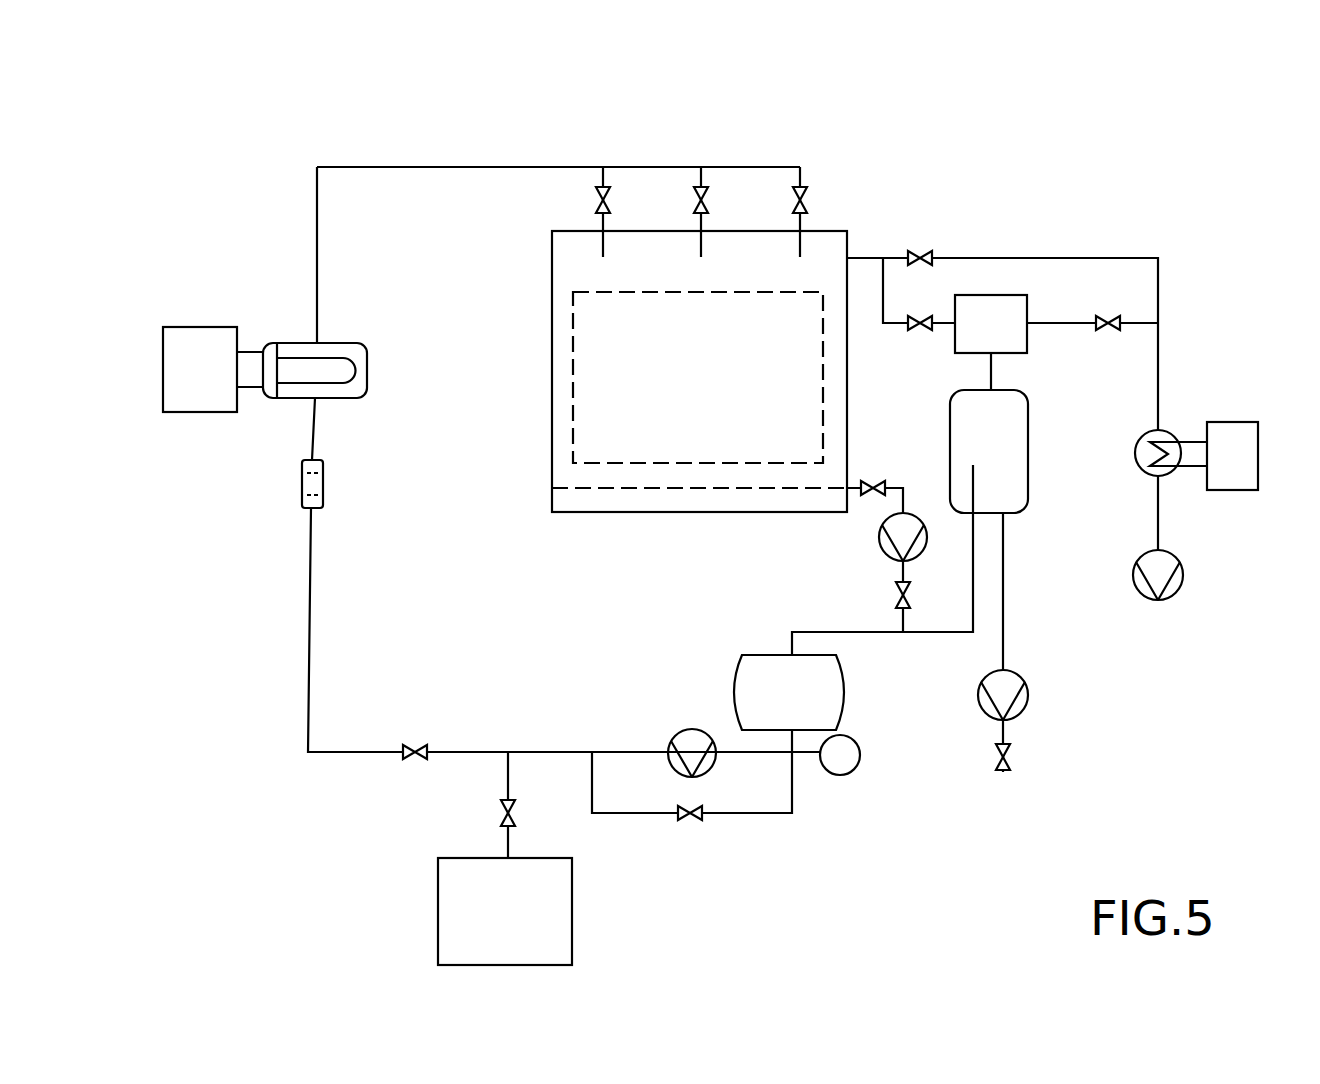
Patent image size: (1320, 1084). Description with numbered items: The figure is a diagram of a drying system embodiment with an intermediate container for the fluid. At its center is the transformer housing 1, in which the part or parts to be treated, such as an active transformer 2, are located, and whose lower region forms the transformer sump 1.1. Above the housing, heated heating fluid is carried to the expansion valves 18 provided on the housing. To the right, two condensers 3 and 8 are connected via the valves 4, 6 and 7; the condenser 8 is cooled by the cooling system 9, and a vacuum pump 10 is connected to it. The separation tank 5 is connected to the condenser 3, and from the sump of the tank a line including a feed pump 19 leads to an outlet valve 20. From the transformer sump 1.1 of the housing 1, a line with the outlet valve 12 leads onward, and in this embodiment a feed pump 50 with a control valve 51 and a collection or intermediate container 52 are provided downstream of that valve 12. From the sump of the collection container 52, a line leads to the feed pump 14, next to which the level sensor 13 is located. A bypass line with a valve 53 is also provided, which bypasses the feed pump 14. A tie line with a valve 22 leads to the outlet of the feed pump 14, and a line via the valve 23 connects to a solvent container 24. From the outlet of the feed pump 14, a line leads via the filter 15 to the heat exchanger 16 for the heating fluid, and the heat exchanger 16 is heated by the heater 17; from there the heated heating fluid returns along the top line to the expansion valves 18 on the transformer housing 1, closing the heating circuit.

The transformer housing 1 is at (847, 392).
The transformer sump 1.1 is at (696, 502).
The active transformer 2 is at (570, 408).
The condenser 3 is at (1018, 342).
The valve 4 is at (918, 330).
The separation tank 5 is at (1012, 464).
The valve 6 is at (1106, 330).
The valve 7 is at (918, 252).
The condenser 8 is at (1136, 455).
The cooling system 9 is at (1236, 434).
The vacuum pump 10 is at (1134, 576).
The valve 12 is at (876, 482).
The level sensor 13 is at (858, 752).
The feed pump 14 is at (678, 740).
The filter 15 is at (318, 490).
The heat exchanger 16 is at (322, 362).
The heater 17 is at (178, 338).
The expansion valves 18 is at (598, 200).
The feed pump 19 is at (1024, 692).
The outlet valve 20 is at (1010, 758).
The valve 22 is at (414, 758).
The valve 23 is at (502, 816).
The solvent container 24 is at (532, 872).
The feed pump 50 is at (888, 538).
The control valve 51 is at (896, 596).
The collection container 52 is at (844, 686).
The valve 53 is at (690, 822).